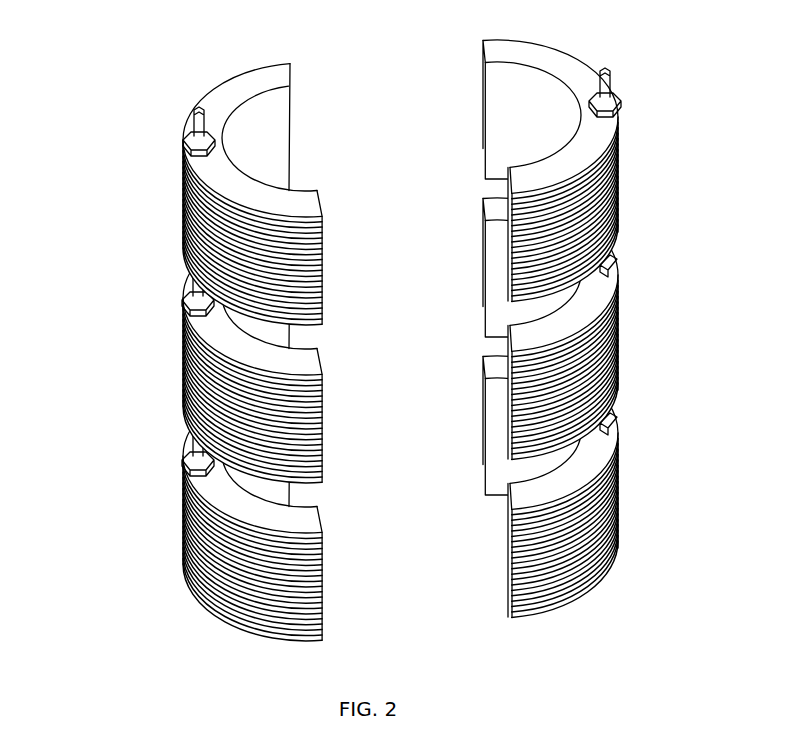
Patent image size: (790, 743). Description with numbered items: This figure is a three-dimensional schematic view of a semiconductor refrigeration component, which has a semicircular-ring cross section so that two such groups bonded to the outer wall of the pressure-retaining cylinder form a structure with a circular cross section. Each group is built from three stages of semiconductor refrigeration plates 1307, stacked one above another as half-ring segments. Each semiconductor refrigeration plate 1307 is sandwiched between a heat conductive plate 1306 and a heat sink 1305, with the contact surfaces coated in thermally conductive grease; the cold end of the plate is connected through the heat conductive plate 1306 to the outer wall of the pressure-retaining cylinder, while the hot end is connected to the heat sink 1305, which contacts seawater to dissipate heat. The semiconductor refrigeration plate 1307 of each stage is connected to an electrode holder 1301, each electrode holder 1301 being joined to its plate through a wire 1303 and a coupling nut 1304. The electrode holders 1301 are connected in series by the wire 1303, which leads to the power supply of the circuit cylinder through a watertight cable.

The electrode holder 1301 is at (610, 83).
The wire 1303 is at (187, 136).
The coupling nut 1304 is at (185, 300).
The heat sink 1305 is at (185, 468).
The heat conductive plate 1306 is at (613, 502).
The semiconductor refrigeration plate 1307 is at (617, 302).